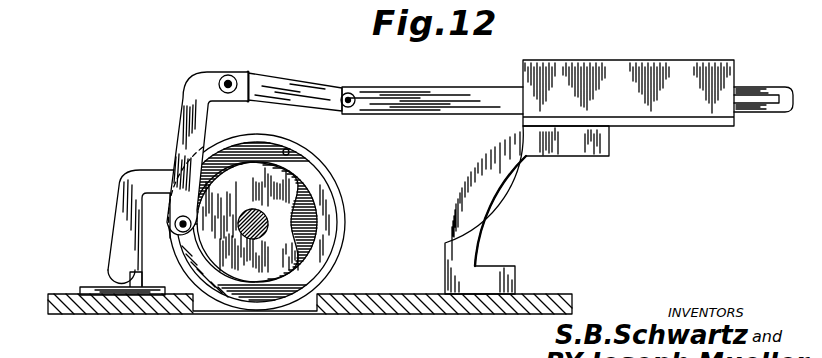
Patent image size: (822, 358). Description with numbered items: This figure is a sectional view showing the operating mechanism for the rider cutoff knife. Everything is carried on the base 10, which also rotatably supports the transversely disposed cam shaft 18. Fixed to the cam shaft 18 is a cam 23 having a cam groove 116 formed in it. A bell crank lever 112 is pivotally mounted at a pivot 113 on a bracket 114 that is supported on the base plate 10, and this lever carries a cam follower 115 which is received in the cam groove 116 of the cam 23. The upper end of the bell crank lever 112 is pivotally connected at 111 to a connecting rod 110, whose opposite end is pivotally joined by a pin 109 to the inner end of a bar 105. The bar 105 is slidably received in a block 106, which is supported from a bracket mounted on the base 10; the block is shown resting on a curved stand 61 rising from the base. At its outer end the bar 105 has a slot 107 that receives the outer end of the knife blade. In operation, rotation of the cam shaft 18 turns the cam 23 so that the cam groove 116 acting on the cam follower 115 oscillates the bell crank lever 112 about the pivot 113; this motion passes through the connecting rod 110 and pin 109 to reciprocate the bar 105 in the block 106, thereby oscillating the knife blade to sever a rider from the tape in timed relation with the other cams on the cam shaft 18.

The base 10 is at (110, 314).
The cam shaft 18 is at (248, 212).
The cam 23 is at (338, 195).
The stand 61 is at (492, 195).
The bar 105 is at (487, 87).
The block 106 is at (618, 70).
The slot 107 is at (783, 70).
The pin 109 is at (350, 96).
The connecting rod 110 is at (318, 63).
The pivotal connection 111 is at (247, 60).
The bell crank lever 112 is at (182, 110).
The pivot 113 is at (118, 262).
The bracket 114 is at (93, 287).
The cam follower 115 is at (177, 233).
The cam groove 116 is at (288, 149).